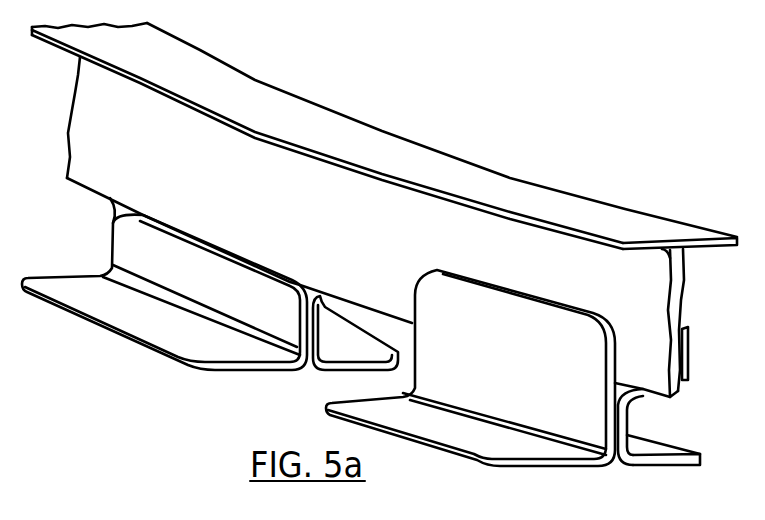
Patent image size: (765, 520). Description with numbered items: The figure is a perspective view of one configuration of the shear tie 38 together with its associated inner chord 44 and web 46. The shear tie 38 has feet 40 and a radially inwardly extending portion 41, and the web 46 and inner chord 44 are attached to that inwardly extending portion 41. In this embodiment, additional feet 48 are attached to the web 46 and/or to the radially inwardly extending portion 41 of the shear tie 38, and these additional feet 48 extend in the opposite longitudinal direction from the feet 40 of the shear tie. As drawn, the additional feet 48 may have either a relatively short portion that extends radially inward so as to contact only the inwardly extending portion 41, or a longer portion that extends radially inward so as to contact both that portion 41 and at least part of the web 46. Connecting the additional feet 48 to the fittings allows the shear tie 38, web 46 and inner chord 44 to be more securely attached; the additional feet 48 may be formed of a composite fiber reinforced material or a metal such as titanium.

The shear tie 38 is at (632, 407).
The feet 40 is at (672, 462).
The radially inwardly extending portion 41 is at (689, 360).
The inner chord 44 is at (617, 223).
The web 46 is at (90, 123).
The additional feet 48 is at (277, 312).